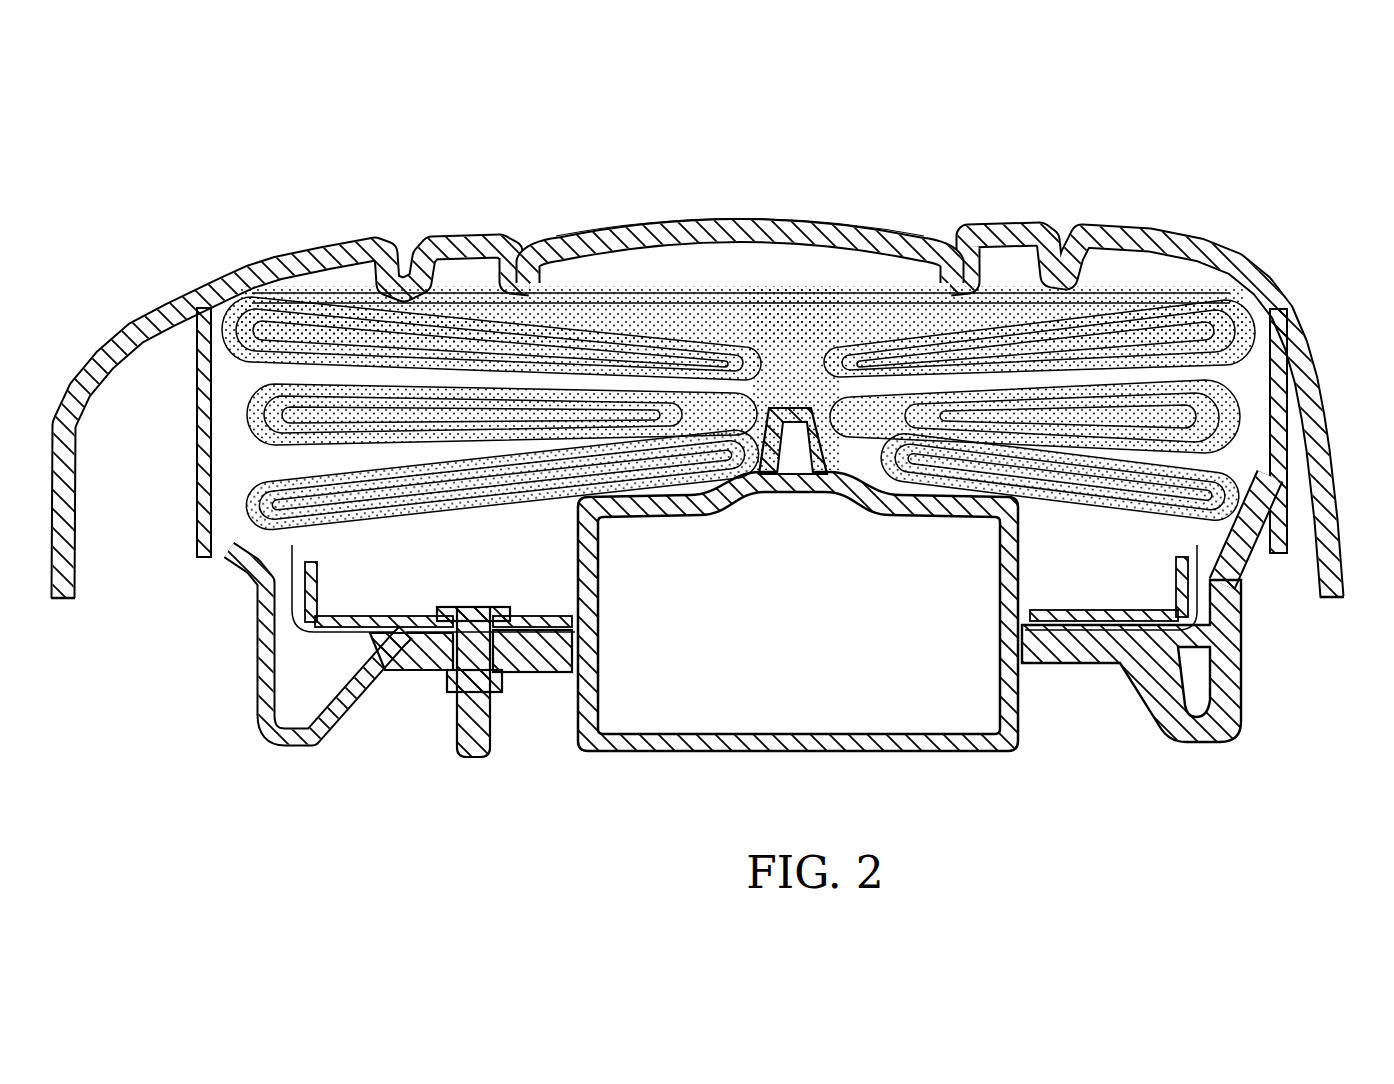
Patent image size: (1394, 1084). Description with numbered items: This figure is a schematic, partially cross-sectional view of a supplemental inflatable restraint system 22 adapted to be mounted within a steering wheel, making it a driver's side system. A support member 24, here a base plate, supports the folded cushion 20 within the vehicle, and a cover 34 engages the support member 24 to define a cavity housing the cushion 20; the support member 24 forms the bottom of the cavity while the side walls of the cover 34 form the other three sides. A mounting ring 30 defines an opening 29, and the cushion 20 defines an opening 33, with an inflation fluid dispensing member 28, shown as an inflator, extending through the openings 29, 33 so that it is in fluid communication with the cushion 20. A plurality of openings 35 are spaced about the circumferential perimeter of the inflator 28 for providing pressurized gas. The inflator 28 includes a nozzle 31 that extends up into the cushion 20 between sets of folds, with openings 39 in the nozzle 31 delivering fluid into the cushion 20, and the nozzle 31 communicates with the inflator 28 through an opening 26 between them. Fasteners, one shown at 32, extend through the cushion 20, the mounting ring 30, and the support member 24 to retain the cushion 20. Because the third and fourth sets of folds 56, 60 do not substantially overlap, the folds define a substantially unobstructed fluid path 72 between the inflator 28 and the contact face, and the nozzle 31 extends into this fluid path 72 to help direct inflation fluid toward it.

The supplemental inflatable restraint system 22 is at (1198, 152).
The cover 34 is at (115, 340).
The nozzle 31 is at (795, 407).
The fluid path 72 is at (783, 365).
The fourth set of folds 60 is at (240, 453).
The third set of folds 56 is at (1250, 416).
The cushion 20 is at (470, 340).
The inflation fluid dispensing member 28 is at (823, 752).
The openings 39 is at (766, 472).
The opening 26 is at (798, 485).
The support member 24 is at (298, 740).
The openings 35 is at (590, 546).
The mounting ring 30 is at (367, 625).
The opening 33 is at (560, 668).
The fastener 32 is at (490, 735).
The opening 29 is at (1023, 657).